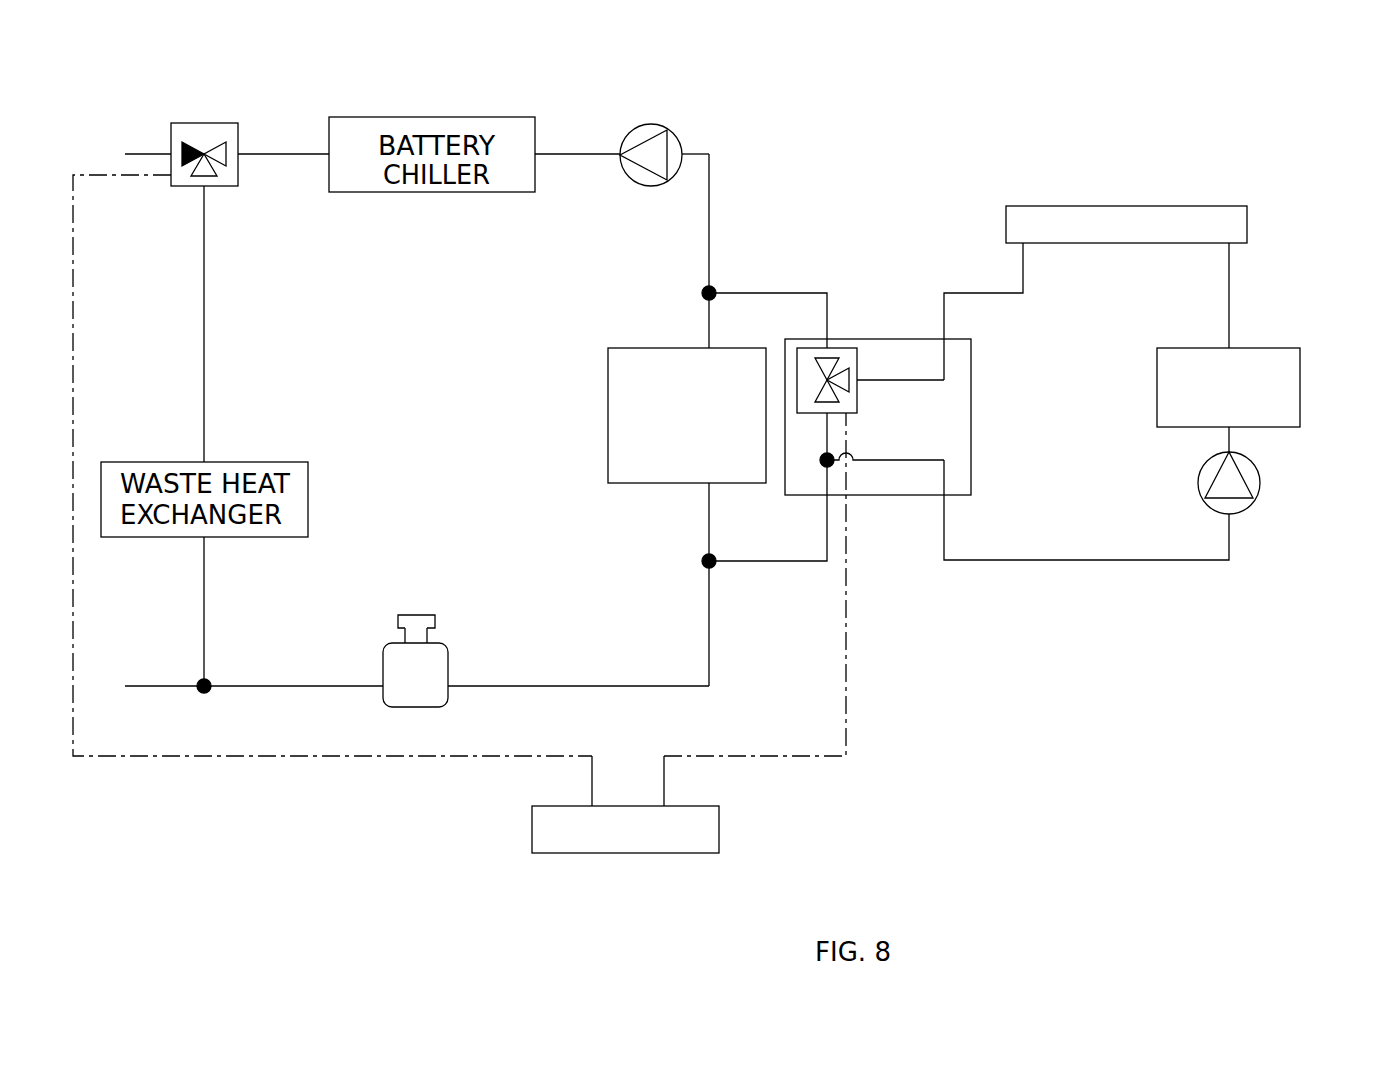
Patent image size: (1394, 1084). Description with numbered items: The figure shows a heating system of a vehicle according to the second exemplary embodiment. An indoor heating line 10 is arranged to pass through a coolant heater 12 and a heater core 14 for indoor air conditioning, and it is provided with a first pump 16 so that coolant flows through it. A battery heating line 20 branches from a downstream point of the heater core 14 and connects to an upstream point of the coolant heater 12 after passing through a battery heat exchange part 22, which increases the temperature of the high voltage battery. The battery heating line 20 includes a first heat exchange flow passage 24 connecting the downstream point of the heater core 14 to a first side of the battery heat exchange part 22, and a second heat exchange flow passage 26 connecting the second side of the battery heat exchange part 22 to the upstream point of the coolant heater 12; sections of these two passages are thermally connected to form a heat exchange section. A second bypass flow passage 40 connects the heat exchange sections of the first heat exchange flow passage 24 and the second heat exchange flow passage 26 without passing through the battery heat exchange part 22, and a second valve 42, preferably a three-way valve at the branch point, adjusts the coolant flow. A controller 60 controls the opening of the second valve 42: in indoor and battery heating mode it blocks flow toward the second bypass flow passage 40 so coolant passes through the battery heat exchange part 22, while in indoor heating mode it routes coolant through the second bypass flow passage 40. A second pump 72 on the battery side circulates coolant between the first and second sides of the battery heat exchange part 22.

The indoor heating line 10 is at (1229, 295).
The coolant heater 12 is at (1300, 388).
The heater core 14 is at (1124, 205).
The first pump 16 is at (1259, 483).
The battery heating line 20 is at (888, 518).
The battery heat exchange part 22 is at (607, 419).
The first heat exchange flow passage 24 is at (767, 293).
The second heat exchange flow passage 26 is at (770, 562).
The second bypass flow passage 40 is at (828, 435).
The second valve 42 is at (847, 347).
The controller 60 is at (719, 827).
The second pump 72 is at (652, 123).